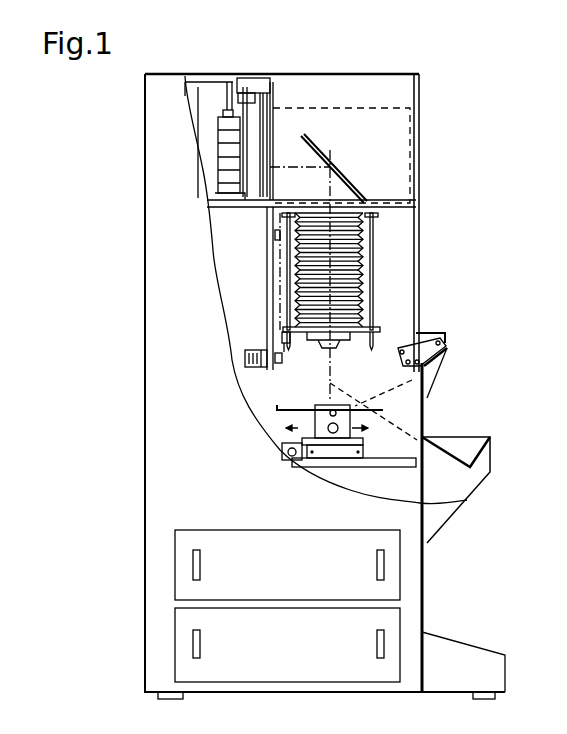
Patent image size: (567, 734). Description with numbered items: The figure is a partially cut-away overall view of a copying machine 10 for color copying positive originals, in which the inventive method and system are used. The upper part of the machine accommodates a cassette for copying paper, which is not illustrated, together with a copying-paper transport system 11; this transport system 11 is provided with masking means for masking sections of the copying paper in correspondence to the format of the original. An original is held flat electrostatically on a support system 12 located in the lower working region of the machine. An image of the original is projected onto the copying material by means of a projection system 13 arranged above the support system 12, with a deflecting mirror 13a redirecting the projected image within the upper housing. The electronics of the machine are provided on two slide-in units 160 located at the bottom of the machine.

The machine frame / housing 10 is at (158, 358).
The copying-paper transport system 11 is at (257, 118).
The support system 12 is at (286, 418).
The projection system 13 is at (363, 305).
The deflecting mirror 13a is at (354, 190).
The slide-in units 160 is at (259, 592).